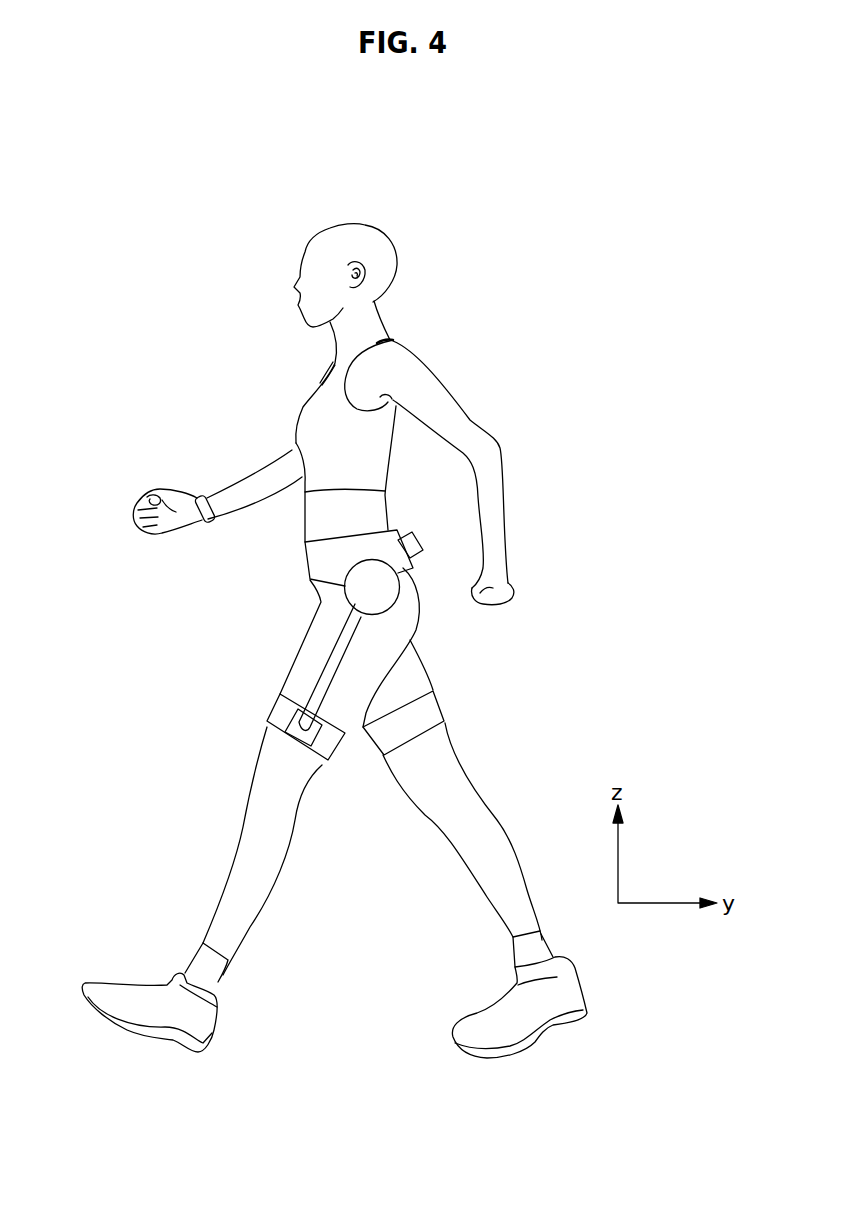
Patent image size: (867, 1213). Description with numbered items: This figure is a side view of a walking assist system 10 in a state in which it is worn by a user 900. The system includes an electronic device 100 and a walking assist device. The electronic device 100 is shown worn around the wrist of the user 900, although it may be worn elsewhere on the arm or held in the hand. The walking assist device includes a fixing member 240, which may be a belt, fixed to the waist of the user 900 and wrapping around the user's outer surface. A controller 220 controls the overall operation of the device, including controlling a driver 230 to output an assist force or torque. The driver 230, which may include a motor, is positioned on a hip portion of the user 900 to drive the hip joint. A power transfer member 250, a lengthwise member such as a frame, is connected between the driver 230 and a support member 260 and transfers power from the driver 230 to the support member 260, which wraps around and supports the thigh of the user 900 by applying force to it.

The walking assist system 10 is at (351, 150).
The electronic device 100 is at (200, 496).
The controller 220 is at (421, 543).
The driver 230 is at (392, 588).
The fixing member 240 is at (366, 540).
The power transfer member 250 is at (350, 642).
The support member 260 is at (277, 713).
The user 900 is at (403, 350).